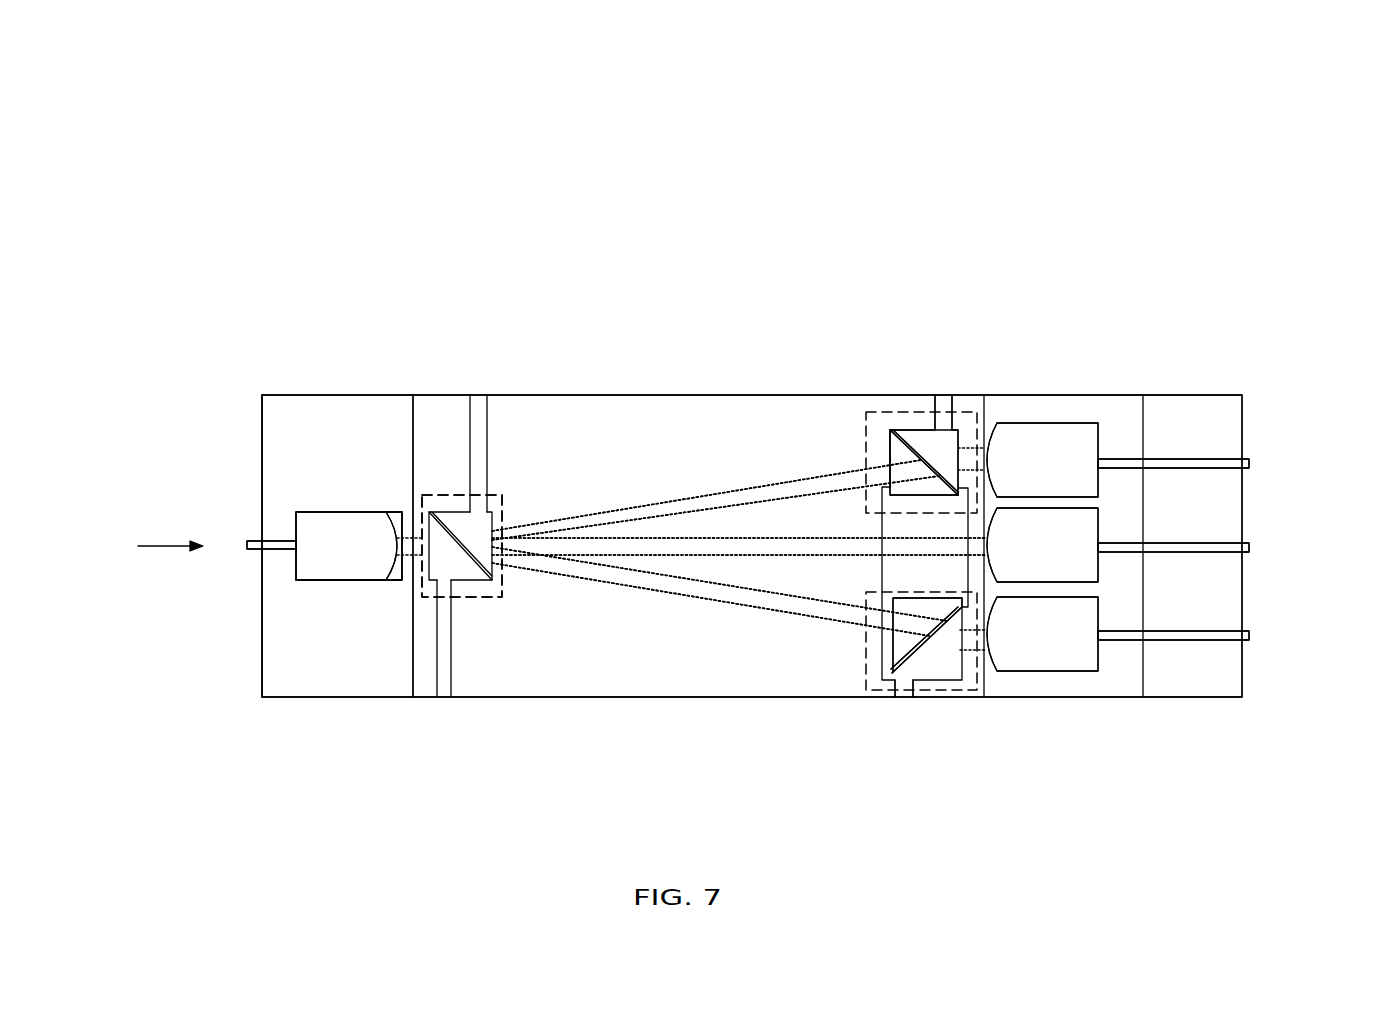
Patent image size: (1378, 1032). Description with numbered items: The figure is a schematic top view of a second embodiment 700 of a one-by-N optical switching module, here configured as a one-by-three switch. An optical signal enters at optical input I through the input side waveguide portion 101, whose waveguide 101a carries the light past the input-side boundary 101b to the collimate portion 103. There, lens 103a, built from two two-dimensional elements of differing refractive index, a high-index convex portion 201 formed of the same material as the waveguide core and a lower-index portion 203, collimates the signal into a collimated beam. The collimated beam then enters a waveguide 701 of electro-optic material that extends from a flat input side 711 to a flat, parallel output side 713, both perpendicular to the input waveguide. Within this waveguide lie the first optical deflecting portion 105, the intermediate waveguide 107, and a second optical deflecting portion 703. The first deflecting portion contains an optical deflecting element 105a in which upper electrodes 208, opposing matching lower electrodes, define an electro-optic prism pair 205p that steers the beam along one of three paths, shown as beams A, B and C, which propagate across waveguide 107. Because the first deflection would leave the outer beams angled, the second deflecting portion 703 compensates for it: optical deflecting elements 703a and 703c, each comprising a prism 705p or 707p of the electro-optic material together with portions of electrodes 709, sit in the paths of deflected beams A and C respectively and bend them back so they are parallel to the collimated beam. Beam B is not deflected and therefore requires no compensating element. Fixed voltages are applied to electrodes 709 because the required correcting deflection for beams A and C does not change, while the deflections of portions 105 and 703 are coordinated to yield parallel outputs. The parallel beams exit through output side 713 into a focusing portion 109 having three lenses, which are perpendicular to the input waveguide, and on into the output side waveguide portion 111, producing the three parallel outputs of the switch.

The second embodiment of the 1×N optical switching module 700 is at (478, 115).
The waveguide of EO material 701 is at (620, 698).
The input side waveguide portion 101 is at (272, 323).
The waveguide 101a is at (260, 543).
The input wall 101b is at (262, 495).
The collimate portion 103 is at (352, 359).
The lens 103a is at (140, 685).
The portion of lens 201 is at (328, 580).
The portion of lens 203 is at (400, 580).
The optical deflecting portion 105 is at (460, 355).
The optical deflecting element 105a is at (445, 495).
The prism pair 205p is at (482, 594).
The upper electrodes 208 is at (485, 427).
The input side 711 is at (404, 671).
The waveguide 107 is at (624, 355).
The second optical deflecting portion 703 is at (943, 335).
The optical deflecting element 703c is at (912, 410).
The optical deflecting element 703a is at (885, 690).
The prism 707p is at (872, 447).
The prism 705p is at (867, 675).
The electrodes 709 is at (944, 393).
The output side 713 is at (994, 416).
The focusing portion 109 is at (1052, 330).
The output side waveguide portion 111 is at (1203, 328).
The optical input I is at (170, 535).
The deflected beam A is at (717, 600).
The beam B is at (758, 537).
The deflected beam C is at (702, 493).